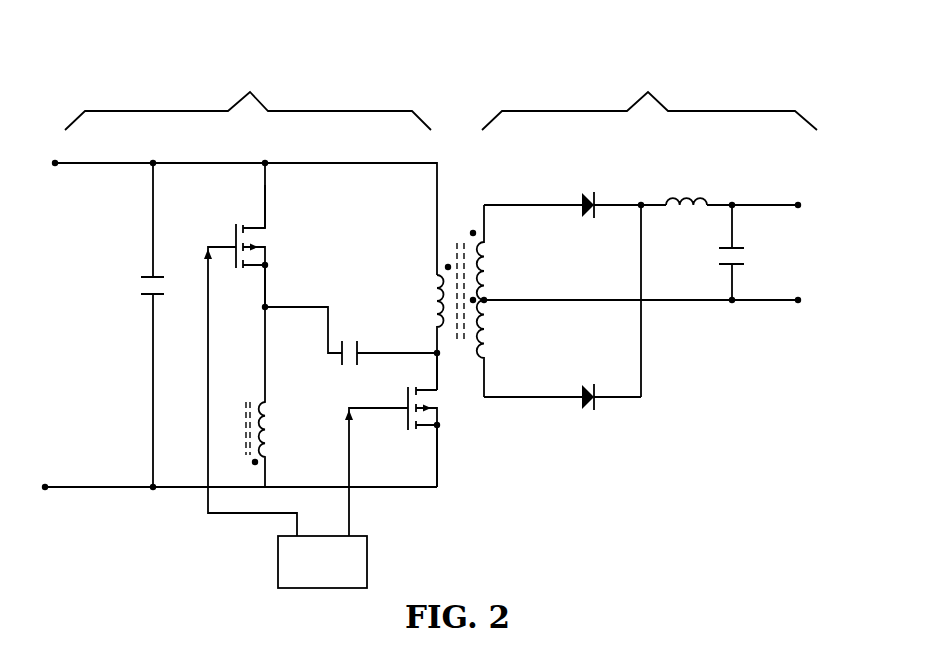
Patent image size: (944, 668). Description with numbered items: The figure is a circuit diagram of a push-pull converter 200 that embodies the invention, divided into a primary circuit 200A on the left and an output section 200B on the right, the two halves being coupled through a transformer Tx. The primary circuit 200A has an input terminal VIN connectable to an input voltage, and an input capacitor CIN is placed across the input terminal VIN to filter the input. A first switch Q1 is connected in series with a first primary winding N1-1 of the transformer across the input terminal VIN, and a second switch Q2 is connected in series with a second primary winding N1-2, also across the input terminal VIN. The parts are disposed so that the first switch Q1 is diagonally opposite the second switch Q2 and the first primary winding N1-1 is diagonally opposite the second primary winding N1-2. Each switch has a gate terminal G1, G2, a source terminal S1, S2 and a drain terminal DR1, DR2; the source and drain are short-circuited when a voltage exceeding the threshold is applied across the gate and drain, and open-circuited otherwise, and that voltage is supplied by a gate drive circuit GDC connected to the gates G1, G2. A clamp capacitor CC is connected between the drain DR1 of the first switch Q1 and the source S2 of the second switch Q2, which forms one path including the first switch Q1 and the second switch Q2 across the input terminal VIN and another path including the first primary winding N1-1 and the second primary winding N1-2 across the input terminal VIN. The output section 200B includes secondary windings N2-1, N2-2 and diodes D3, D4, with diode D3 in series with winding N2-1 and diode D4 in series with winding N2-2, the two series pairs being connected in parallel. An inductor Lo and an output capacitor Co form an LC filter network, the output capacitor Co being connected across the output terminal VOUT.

The push-pull converter 200 is at (827, 216).
The primary circuit 200A is at (248, 97).
The output section 200B is at (649, 97).
The input terminal VIN is at (69, 330).
The input capacitor CIN is at (136, 325).
The first switch Q1 is at (419, 425).
The second switch Q2 is at (275, 235).
The drain terminal of first switch DR1 is at (439, 395).
The drain terminal of second switch DR2 is at (266, 203).
The source terminal of first switch S1 is at (439, 462).
The source terminal of second switch S2 is at (266, 292).
The gate terminal of first switch G1 is at (367, 460).
The gate terminal of second switch G2 is at (236, 385).
The clamp capacitor CC is at (352, 336).
The transformer Tx is at (463, 261).
The first primary winding of transformer N1-1 is at (413, 327).
The second primary winding of transformer N1-2 is at (280, 397).
The secondary winding N2-1 is at (504, 254).
The secondary winding N2-2 is at (508, 348).
The diode D3 is at (587, 190).
The diode D4 is at (587, 382).
The inductor Lo is at (686, 183).
The output capacitor Co is at (715, 252).
The output terminal VOUT is at (799, 252).
The gate drive circuit GDC is at (322, 562).